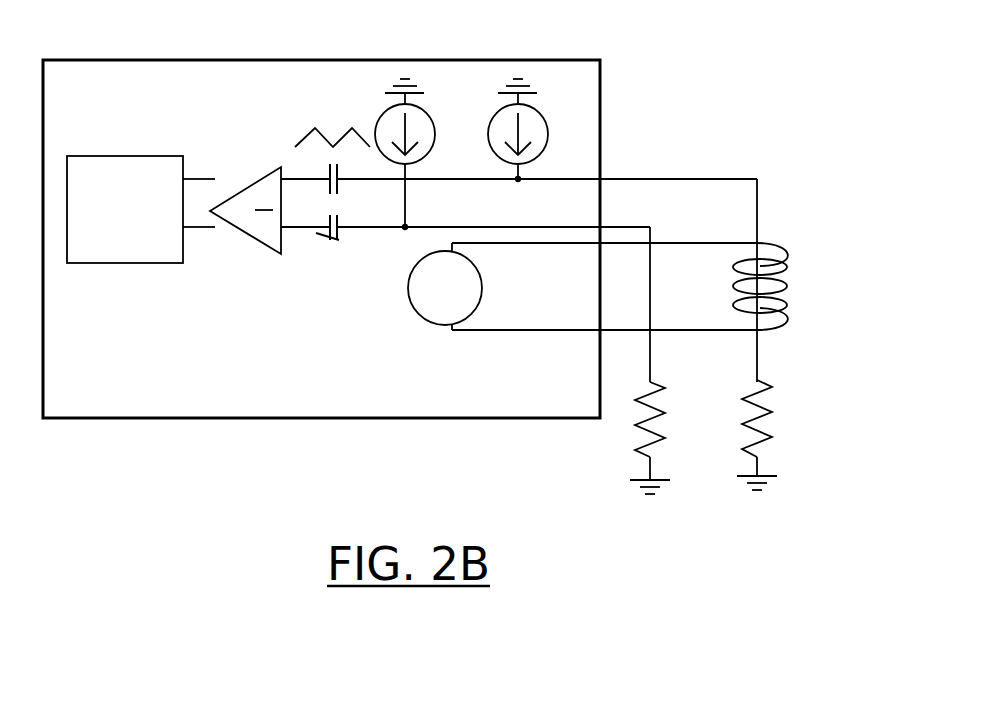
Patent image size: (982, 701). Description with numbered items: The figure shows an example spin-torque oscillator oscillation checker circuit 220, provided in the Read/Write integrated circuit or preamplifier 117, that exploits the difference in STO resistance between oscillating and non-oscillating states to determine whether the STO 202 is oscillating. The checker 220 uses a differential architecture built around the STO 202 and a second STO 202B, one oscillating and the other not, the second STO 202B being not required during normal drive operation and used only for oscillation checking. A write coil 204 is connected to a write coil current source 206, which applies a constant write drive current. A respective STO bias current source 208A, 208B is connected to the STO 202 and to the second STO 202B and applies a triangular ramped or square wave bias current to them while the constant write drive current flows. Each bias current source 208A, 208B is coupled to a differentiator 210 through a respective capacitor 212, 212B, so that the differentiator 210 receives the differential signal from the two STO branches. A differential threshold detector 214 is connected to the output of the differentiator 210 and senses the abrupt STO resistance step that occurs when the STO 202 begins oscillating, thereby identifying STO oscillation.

The STO oscillation checker circuit 220 is at (487, 28).
The Read/Write integrated circuit 117 is at (172, 90).
The differential threshold detector 214 is at (137, 232).
The differentiator 210 is at (266, 177).
The capacitor 212 is at (332, 190).
The capacitor 212B is at (333, 239).
The STO bias current source 208A is at (539, 114).
The STO bias current source 208B is at (426, 114).
The write coil current source 206 is at (413, 266).
The write coil 204 is at (792, 286).
The spin-torque oscillator 202 is at (777, 435).
The second spin-torque oscillator 202B is at (683, 438).